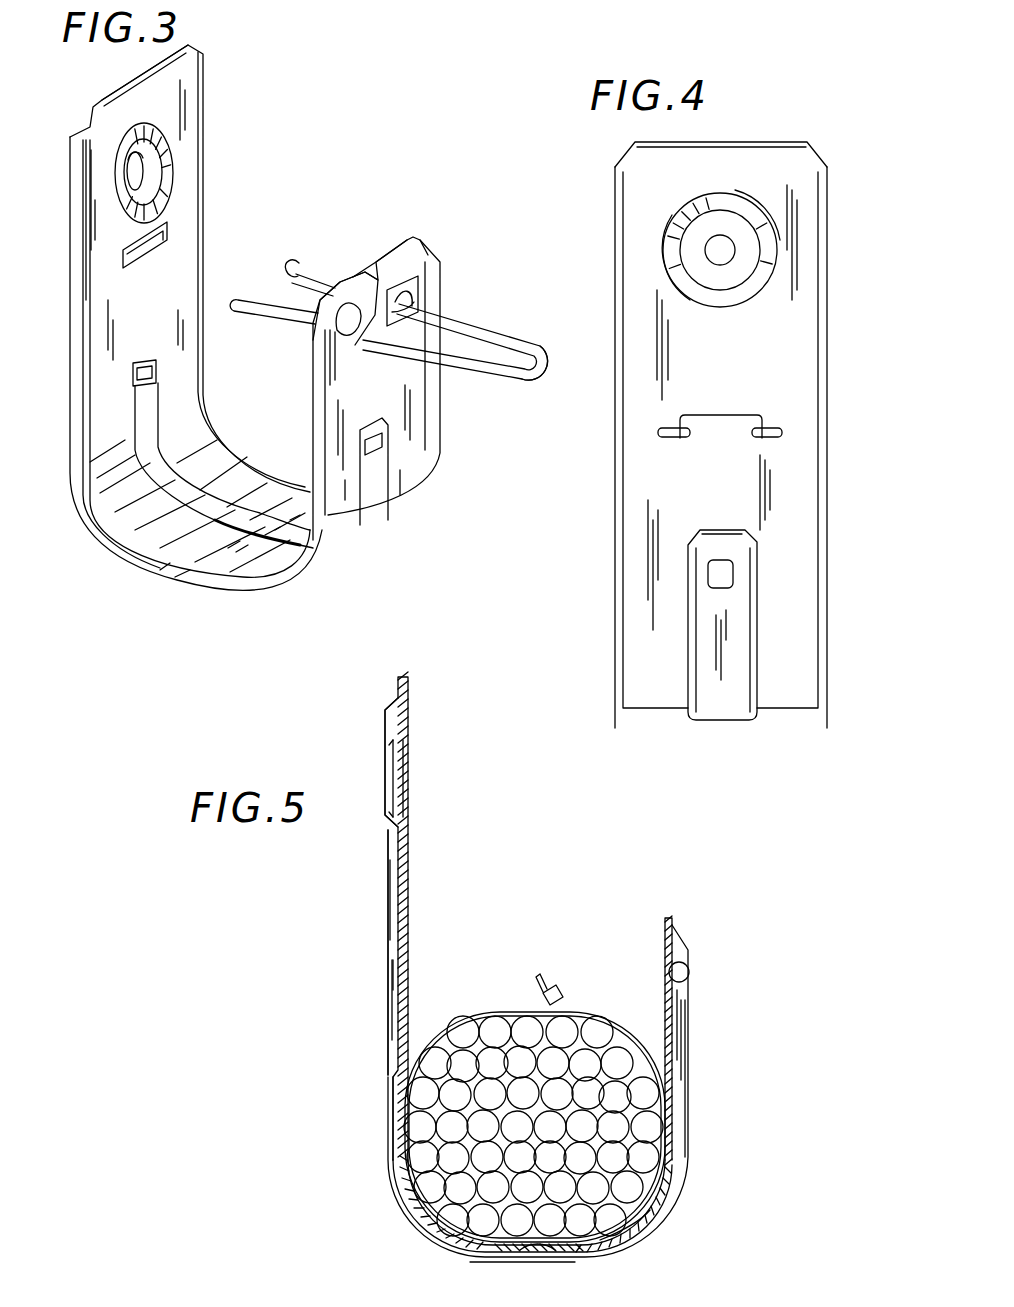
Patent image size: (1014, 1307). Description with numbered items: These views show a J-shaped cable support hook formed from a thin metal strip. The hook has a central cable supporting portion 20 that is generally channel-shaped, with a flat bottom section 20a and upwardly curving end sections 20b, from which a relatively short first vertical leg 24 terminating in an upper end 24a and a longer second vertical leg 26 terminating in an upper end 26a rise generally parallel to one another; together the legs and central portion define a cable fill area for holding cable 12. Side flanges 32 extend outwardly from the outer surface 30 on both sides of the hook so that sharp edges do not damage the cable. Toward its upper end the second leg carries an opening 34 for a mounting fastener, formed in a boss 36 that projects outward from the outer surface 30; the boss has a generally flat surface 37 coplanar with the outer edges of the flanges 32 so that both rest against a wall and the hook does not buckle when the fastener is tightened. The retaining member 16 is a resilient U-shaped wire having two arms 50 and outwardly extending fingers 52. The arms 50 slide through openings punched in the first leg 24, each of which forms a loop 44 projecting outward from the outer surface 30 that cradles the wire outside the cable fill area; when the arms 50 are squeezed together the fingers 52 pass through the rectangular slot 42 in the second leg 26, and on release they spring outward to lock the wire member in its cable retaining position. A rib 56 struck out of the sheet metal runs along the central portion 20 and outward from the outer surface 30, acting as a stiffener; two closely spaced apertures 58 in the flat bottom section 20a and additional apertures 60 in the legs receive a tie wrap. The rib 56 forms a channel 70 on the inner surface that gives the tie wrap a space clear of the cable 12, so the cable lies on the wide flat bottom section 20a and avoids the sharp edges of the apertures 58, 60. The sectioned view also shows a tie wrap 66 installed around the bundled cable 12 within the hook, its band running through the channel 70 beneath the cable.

In FIG. 5, the cable 12 is at (600, 1035).
In FIG. 3, the retaining member 16 is at (530, 352).
In FIG. 3, the central cable supporting portion 20 is at (281, 363).
In FIG. 3, the flat bottom section 20a is at (250, 560).
In FIG. 3, the upwardly curving end sections 20b is at (125, 490).
In FIG. 3, the first vertical leg 24 is at (329, 347).
In FIG. 5, the first vertical leg 24 is at (712, 1020).
In FIG. 3, the upper end of first leg 24a is at (392, 255).
In FIG. 3, the second vertical leg 26 is at (222, 337).
In FIG. 4, the second vertical leg 26 is at (797, 355).
In FIG. 5, the second vertical leg 26 is at (395, 916).
In FIG. 3, the upper end of second leg 26a is at (132, 82).
In FIG. 4, the outer surface 30 is at (721, 440).
In FIG. 3, the side flanges 32 is at (407, 513).
In FIG. 4, the side flanges 32 is at (828, 690).
In FIG. 5, the side flanges 32 is at (392, 1033).
In FIG. 3, the opening 34 is at (143, 170).
In FIG. 4, the opening 34 is at (725, 238).
In FIG. 5, the opening 34 is at (392, 790).
In FIG. 4, the boss 36 is at (745, 253).
In FIG. 5, the boss 36 is at (385, 760).
In FIG. 3, the flat surface 37 is at (138, 186).
In FIG. 5, the flat surface 37 is at (385, 808).
In FIG. 3, the rectangular slot 42 is at (165, 235).
In FIG. 5, the rectangular slot 42 is at (405, 960).
In FIG. 3, the loop 44 is at (345, 297).
In FIG. 5, the loop 44 is at (688, 955).
In FIG. 3, the arms 50 is at (452, 318).
In FIG. 3, the fingers 52 is at (290, 262).
In FIG. 4, the fingers 52 is at (785, 433).
In FIG. 4, the rib 56 is at (718, 700).
In FIG. 5, the rib 56 is at (535, 1112).
In FIG. 5, the apertures 58 is at (580, 1253).
In FIG. 3, the apertures 60 is at (260, 454).
In FIG. 4, the apertures 60 is at (728, 575).
In FIG. 5, the apertures 60 is at (395, 1117).
In FIG. 5, the cable tie 66 is at (500, 1015).
In FIG. 5, the channel 70 is at (640, 1220).